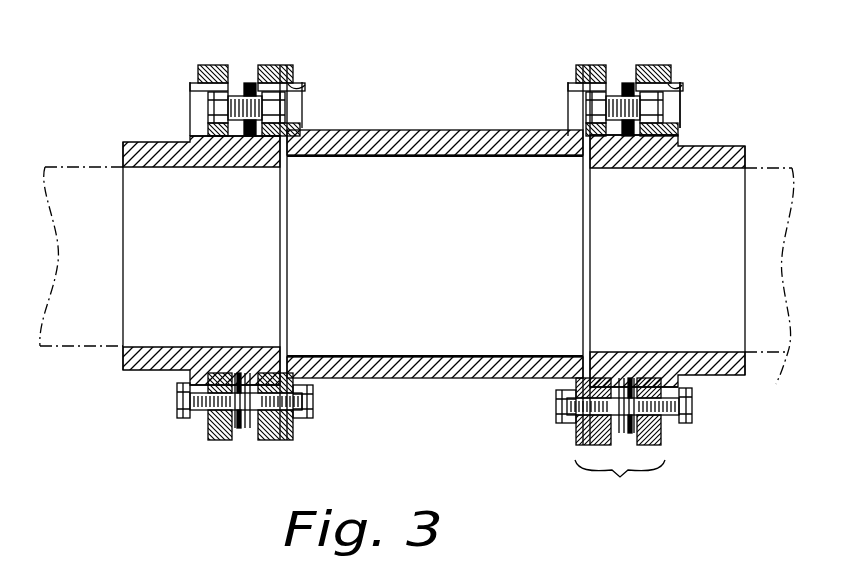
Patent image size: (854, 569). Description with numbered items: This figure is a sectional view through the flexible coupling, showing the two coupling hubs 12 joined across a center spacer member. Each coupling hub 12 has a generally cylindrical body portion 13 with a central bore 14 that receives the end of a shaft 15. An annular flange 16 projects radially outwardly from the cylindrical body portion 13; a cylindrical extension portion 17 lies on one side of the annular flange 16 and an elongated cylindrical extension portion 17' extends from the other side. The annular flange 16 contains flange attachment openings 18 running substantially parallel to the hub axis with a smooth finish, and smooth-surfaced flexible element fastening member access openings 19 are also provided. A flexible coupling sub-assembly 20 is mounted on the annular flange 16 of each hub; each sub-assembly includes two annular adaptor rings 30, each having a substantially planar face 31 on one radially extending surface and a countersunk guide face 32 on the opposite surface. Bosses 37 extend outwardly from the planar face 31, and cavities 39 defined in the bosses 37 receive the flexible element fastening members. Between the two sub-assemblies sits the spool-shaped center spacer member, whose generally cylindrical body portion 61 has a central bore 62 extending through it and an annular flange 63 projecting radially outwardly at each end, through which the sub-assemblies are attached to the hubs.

The coupling hub 12 is at (162, 116).
The cylindrical body portion 13 is at (140, 141).
The central bore 14 is at (133, 343).
The shaft 15 is at (80, 166).
The annular flange 16 is at (187, 425).
The cylindrical extension portion 17 is at (200, 271).
The elongated cylindrical extension portion 17' is at (490, 272).
The flange attachment opening 18 is at (688, 420).
The flexible element fastening member access opening 19 is at (680, 82).
The flexible coupling sub-assembly 20 is at (620, 443).
The adaptor ring 30 is at (214, 65).
The planar face 31 is at (243, 433).
The countersunk guide face 32 is at (303, 418).
The boss 37 is at (625, 85).
The cavity 39 is at (682, 98).
The cylindrical body portion 61 is at (466, 378).
The central bore 62 is at (437, 160).
The annular flange 63 is at (306, 86).